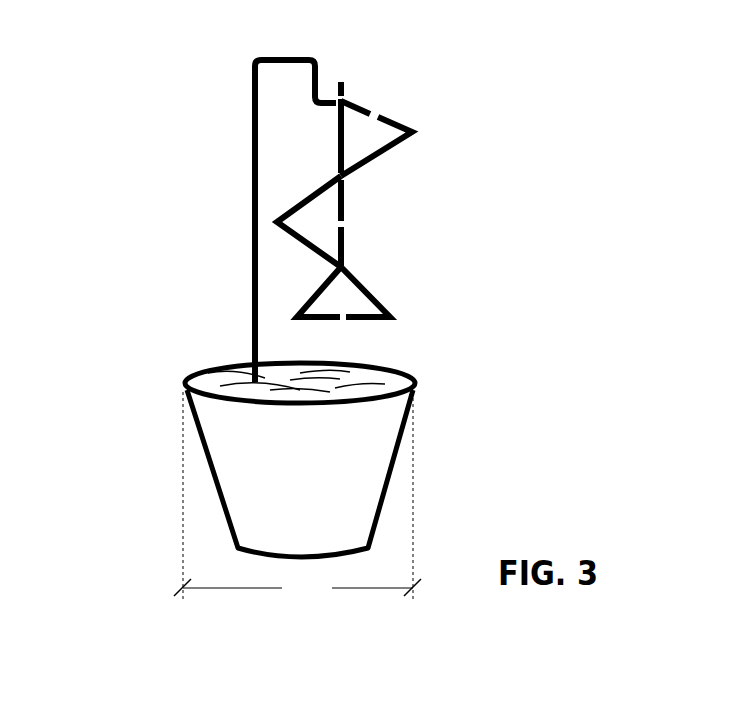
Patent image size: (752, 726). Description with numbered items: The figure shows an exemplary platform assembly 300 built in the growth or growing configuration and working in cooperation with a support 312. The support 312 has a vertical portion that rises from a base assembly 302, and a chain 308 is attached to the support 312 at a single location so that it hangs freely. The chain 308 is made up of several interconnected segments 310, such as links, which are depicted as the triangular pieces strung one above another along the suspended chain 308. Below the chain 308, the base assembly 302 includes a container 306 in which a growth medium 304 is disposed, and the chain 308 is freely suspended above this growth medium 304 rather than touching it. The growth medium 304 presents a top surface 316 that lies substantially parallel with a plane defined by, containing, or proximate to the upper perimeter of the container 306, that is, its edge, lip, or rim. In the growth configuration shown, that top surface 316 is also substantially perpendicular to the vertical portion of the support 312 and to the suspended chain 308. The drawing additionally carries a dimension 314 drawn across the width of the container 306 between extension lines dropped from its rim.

The platform assembly 300 is at (197, 98).
The base assembly 302 is at (151, 467).
The growth medium 304 is at (345, 366).
The container 306 is at (370, 455).
The chain 308 is at (542, 164).
The segments 310 is at (412, 133).
The support 312 is at (252, 183).
The pot width dimension 314 is at (297, 498).
The top surface 316 is at (198, 353).